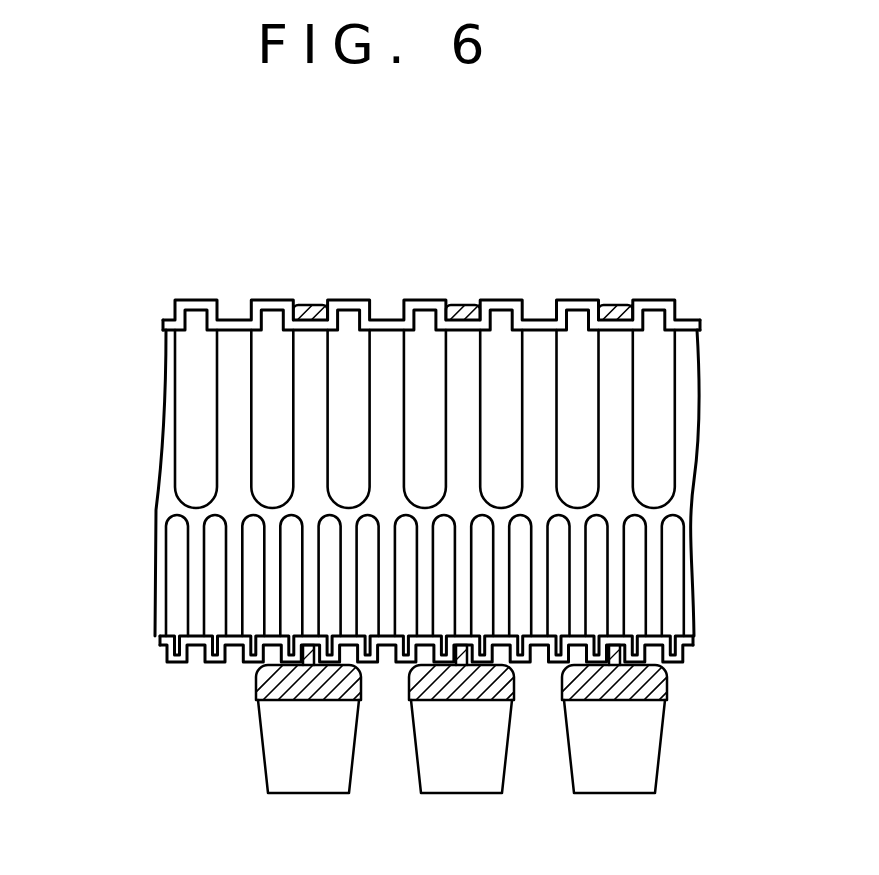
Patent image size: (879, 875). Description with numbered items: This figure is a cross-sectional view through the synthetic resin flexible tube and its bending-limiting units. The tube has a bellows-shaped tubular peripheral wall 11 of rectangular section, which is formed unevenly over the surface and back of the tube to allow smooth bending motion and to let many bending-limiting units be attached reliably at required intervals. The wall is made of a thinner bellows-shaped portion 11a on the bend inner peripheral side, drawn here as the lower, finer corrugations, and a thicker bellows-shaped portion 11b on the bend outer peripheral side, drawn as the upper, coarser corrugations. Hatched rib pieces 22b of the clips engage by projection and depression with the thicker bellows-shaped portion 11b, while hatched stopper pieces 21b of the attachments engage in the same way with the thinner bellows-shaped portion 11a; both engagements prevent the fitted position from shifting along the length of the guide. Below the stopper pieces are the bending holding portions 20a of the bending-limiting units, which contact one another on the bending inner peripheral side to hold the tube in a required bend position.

The bellows-shaped tubular peripheral wall 11 is at (75, 248).
The thinner bellows-shaped portion 11a is at (192, 647).
The thicker bellows-shaped portion 11b is at (233, 318).
The rib piece 22b is at (617, 320).
The stopper piece 21b is at (632, 656).
The bending holding portion 20a is at (658, 762).